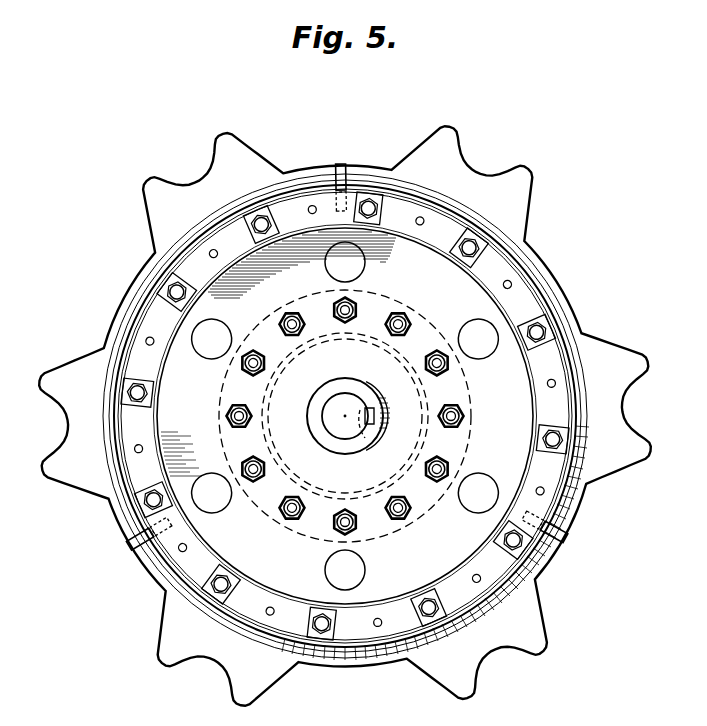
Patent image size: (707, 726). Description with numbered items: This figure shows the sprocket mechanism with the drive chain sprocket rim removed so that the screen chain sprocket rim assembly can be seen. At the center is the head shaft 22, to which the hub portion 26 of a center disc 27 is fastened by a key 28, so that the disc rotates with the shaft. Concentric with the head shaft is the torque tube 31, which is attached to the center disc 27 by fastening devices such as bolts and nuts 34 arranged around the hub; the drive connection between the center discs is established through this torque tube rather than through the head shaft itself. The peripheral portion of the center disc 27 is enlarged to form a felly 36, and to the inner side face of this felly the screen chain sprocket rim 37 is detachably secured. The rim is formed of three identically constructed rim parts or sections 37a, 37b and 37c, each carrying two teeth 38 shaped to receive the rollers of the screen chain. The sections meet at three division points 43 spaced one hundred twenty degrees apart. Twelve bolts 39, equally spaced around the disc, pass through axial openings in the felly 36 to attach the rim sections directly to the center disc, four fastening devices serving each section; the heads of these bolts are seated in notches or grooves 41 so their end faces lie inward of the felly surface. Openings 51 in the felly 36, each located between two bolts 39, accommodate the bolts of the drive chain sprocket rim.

The head shaft 22 is at (335, 405).
The hub portion 26 is at (366, 393).
The center disc 27 is at (333, 411).
The key 28 is at (370, 433).
The torque tube 31 is at (280, 443).
The bolts and nuts 34 is at (236, 408).
The felly 36 is at (500, 268).
The screen chain sprocket rim 37 is at (145, 255).
The rim part or section 37a is at (121, 310).
The rim part or section 37b is at (341, 670).
The rim part or section 37c is at (574, 306).
The teeth 38 is at (200, 178).
The bolts 39 is at (368, 200).
The notches or grooves 41 is at (272, 208).
The division points 43 is at (340, 163).
The openings 51 is at (426, 218).